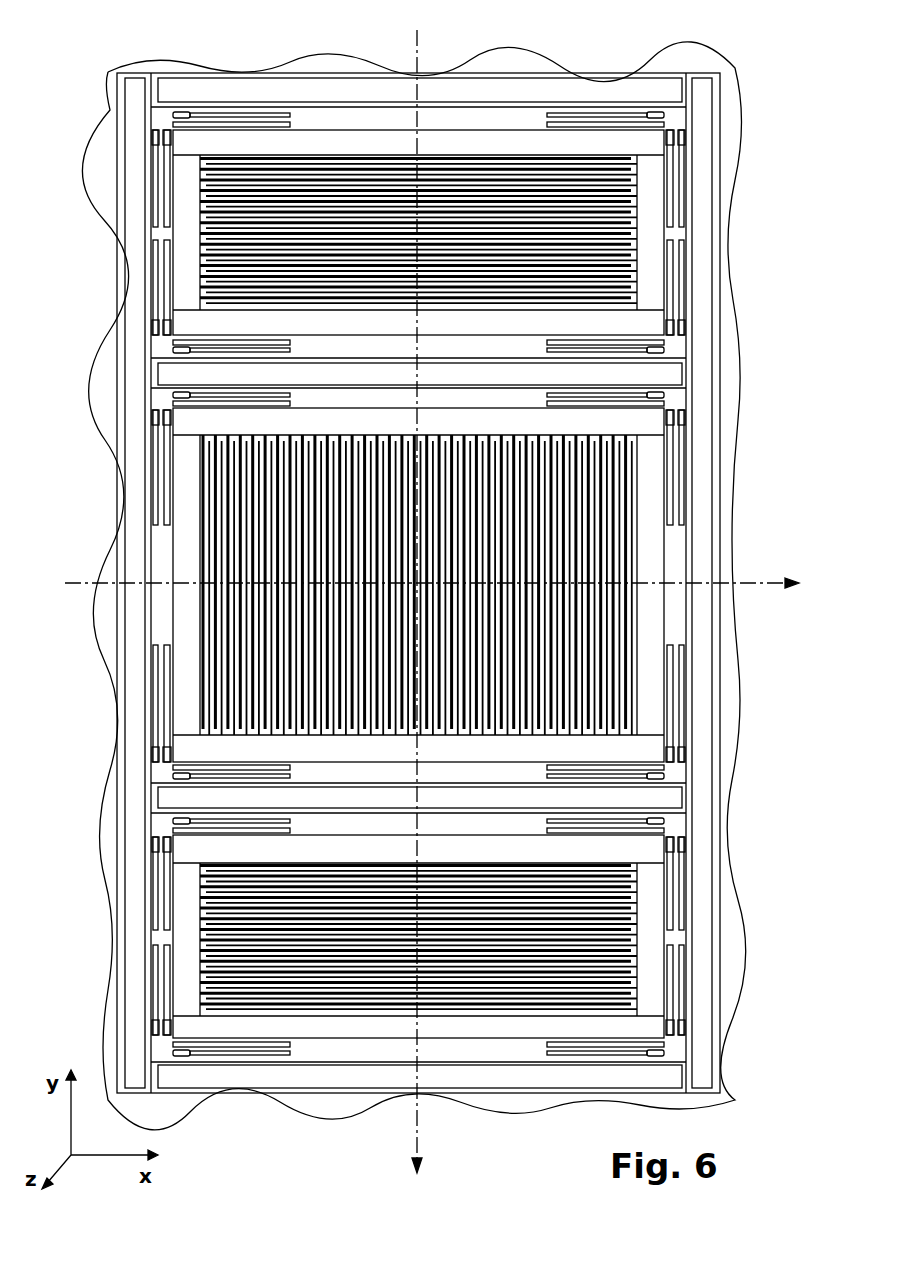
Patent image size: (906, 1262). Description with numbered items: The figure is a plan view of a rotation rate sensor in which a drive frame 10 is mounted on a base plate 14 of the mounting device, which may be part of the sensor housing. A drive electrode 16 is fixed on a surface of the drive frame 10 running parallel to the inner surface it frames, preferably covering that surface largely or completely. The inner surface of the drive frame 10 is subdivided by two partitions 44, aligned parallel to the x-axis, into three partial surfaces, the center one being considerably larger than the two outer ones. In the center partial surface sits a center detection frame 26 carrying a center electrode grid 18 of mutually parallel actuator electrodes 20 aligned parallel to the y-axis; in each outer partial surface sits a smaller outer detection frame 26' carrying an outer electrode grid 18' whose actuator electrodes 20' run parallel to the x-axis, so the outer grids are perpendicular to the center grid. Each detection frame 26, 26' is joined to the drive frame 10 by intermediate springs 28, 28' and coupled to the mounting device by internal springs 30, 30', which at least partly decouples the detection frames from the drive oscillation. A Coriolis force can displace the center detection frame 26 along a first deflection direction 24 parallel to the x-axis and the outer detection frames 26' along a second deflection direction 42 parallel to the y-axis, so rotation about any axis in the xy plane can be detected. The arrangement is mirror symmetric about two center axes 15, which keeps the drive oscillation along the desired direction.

The drive frame 10 is at (725, 1003).
The base plate 14 is at (732, 137).
The center axes 15 is at (415, 33).
The drive electrode 16 is at (690, 792).
The center electrode grid 18 is at (497, 585).
The outer electrode grid 18' is at (342, 658).
The actuator electrode 20 is at (482, 585).
The actuator electrode 20' is at (484, 584).
The first deflection direction 24 is at (780, 563).
The center detection frame 26 is at (482, 585).
The outer detection frame 26' is at (356, 656).
The intermediate spring 28 is at (421, 559).
The intermediate spring 28' is at (422, 582).
The internal spring 30 is at (421, 585).
The internal spring 30' is at (418, 585).
The second deflection direction 42 is at (410, 1143).
The partition 44 is at (665, 800).